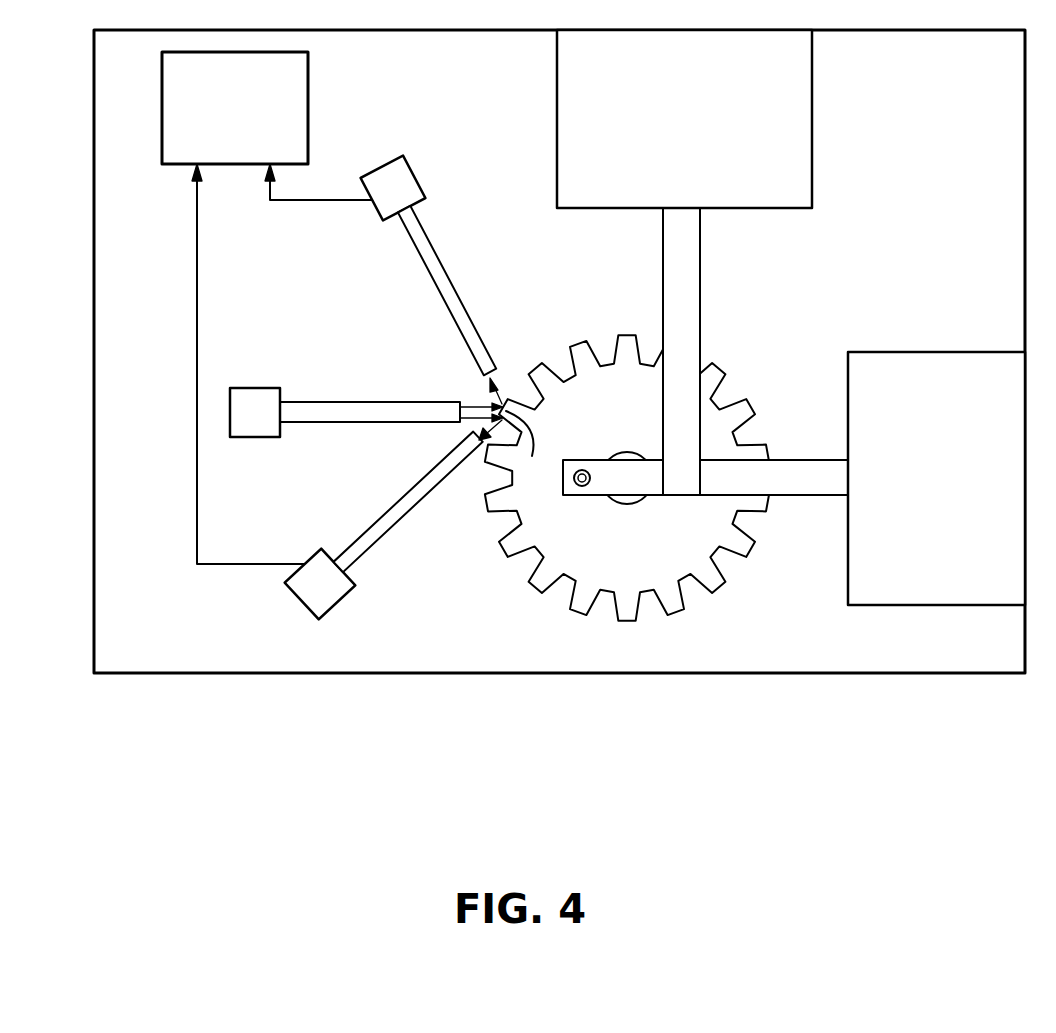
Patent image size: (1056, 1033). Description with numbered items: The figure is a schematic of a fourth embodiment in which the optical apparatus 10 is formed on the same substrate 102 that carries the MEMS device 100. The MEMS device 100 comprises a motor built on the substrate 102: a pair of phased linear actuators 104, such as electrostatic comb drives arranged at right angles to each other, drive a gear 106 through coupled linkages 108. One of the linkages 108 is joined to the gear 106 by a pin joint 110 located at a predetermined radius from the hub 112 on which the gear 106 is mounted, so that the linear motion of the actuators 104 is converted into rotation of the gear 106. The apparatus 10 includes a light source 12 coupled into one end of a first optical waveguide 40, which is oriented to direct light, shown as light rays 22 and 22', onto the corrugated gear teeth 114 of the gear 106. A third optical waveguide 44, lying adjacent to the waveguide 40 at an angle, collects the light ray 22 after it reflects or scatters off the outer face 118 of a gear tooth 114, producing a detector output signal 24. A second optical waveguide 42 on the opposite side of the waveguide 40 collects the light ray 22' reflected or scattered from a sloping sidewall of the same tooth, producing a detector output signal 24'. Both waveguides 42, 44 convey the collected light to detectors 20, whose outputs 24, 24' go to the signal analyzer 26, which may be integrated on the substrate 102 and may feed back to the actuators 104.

The optical apparatus 10 is at (182, 594).
The light source 12 is at (270, 422).
The detectors 20 is at (407, 200).
The light ray 22 is at (459, 391).
The light ray 22' is at (454, 435).
The detector output signal 24 is at (318, 205).
The detector output signal 24' is at (248, 364).
The signal analyzer 26 is at (219, 146).
The first optical waveguide 40 is at (335, 402).
The second optical waveguide 42 is at (390, 507).
The third optical waveguide 44 is at (437, 298).
The MEMS device 100 is at (771, 722).
The substrate 102 is at (901, 141).
The phased linear actuators 104 is at (660, 141).
The gear 106 is at (610, 577).
The linkages 108 is at (700, 261).
The pin joint 110 is at (578, 489).
The hub 112 is at (625, 452).
The gear teeth 114 is at (520, 554).
The outer surface of gear tooth 118 is at (532, 442).